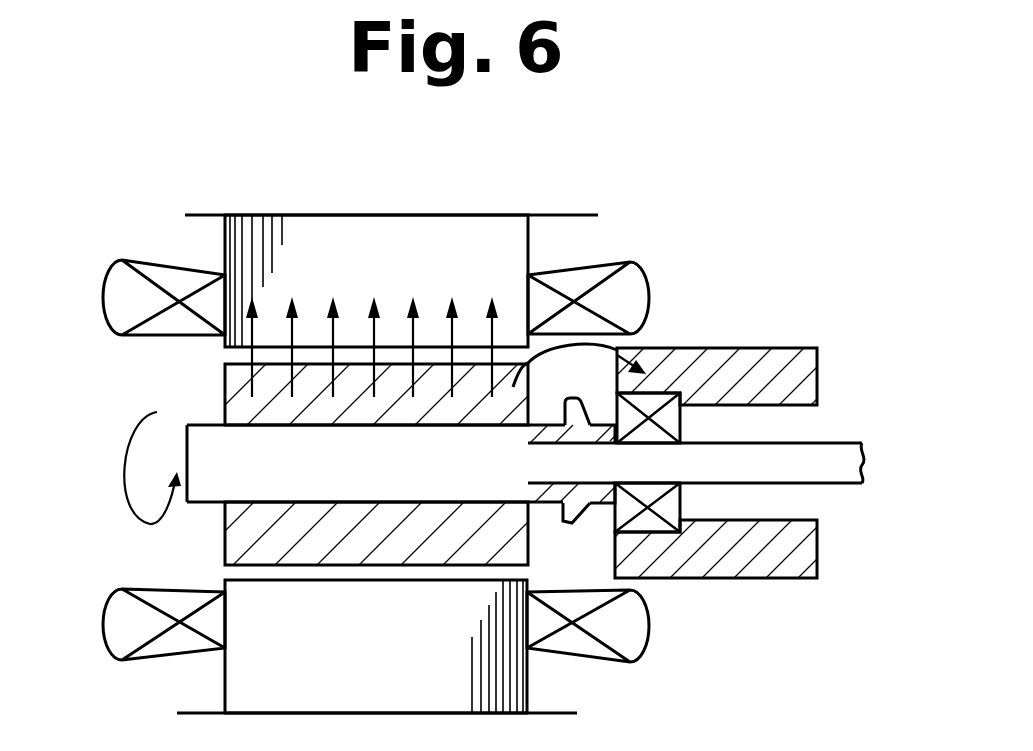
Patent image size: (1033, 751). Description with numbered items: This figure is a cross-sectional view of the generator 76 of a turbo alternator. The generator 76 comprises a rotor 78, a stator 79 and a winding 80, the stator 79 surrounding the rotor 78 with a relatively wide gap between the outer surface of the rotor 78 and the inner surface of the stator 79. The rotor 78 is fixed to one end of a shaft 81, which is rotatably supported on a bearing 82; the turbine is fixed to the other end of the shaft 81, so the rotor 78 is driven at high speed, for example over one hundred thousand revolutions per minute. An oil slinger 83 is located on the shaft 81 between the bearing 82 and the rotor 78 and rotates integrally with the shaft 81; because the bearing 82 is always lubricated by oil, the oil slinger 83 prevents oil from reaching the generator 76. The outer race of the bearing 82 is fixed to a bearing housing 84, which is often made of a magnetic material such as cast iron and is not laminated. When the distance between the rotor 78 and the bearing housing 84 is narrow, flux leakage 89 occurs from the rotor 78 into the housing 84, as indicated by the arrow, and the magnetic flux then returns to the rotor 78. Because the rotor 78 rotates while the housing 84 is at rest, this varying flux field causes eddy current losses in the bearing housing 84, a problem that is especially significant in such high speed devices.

The generator 76 is at (165, 240).
The rotor 78 is at (240, 537).
The stator 79 is at (305, 233).
The winding 80 is at (650, 265).
The shaft 81 is at (847, 450).
The bearing 82 is at (655, 520).
The oil slinger 83 is at (572, 522).
The bearing housing 84 is at (790, 560).
The flux leakage 89 is at (603, 350).